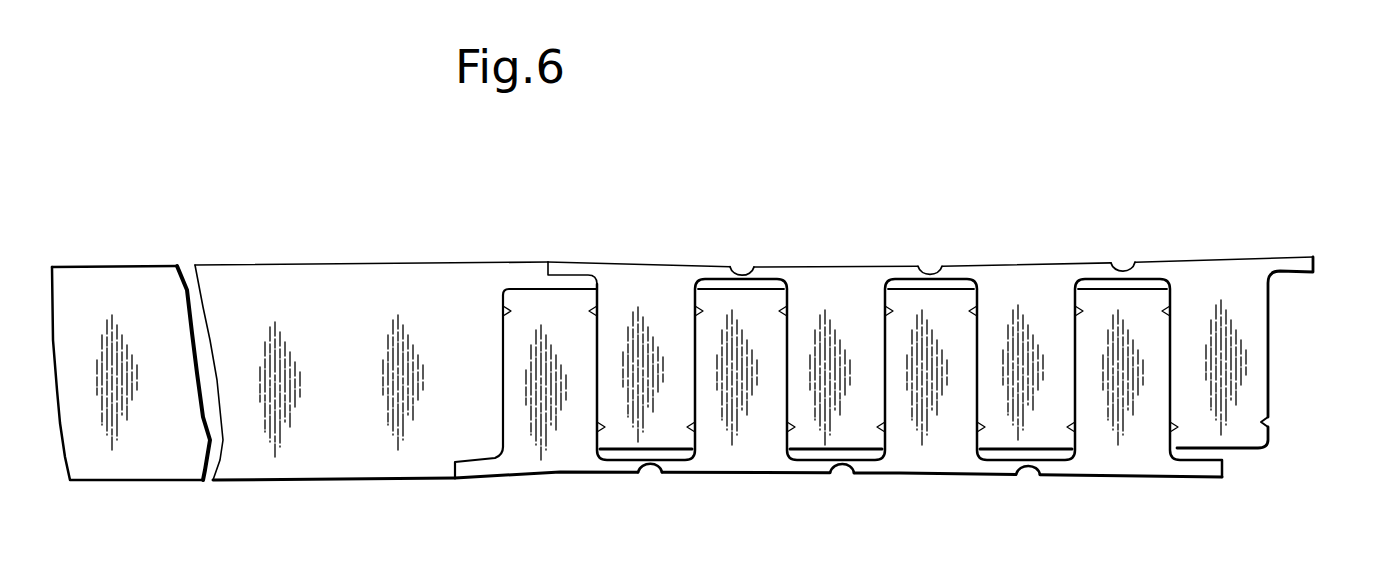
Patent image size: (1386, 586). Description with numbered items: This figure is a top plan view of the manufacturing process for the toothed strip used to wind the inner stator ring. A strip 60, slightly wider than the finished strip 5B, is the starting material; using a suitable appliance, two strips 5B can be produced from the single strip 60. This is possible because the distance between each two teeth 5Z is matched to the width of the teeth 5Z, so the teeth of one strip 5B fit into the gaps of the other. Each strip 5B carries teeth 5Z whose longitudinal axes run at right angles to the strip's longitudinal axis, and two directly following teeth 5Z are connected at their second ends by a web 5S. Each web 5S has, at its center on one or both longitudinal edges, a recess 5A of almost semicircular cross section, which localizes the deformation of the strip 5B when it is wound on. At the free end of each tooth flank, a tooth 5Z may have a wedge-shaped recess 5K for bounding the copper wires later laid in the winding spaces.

The strip 60 is at (365, 308).
The teeth 5Z is at (665, 300).
The recess 5A is at (739, 262).
The web 5S is at (912, 269).
The strip 5B is at (1292, 338).
The wedge-shaped recess 5K is at (1273, 423).